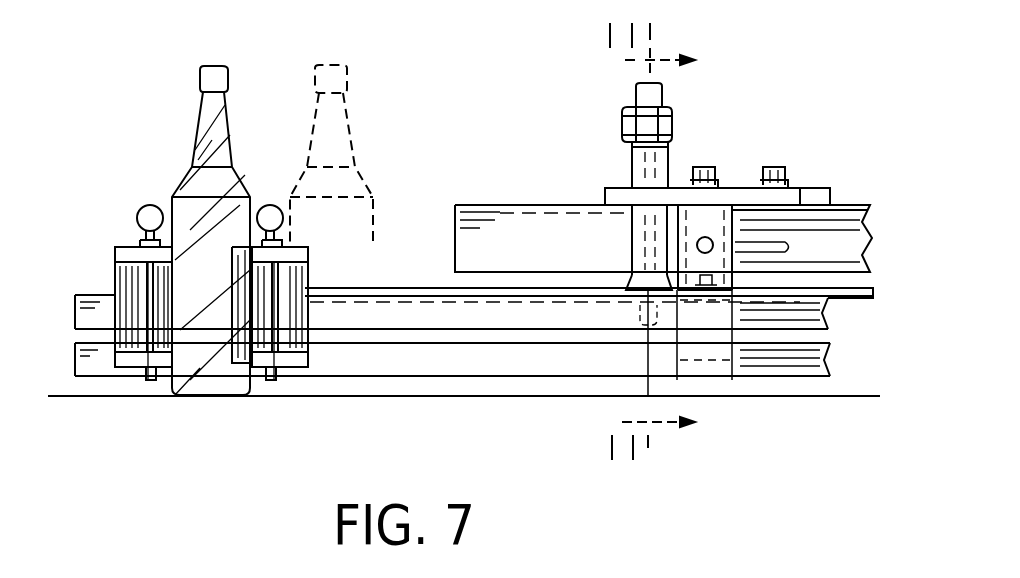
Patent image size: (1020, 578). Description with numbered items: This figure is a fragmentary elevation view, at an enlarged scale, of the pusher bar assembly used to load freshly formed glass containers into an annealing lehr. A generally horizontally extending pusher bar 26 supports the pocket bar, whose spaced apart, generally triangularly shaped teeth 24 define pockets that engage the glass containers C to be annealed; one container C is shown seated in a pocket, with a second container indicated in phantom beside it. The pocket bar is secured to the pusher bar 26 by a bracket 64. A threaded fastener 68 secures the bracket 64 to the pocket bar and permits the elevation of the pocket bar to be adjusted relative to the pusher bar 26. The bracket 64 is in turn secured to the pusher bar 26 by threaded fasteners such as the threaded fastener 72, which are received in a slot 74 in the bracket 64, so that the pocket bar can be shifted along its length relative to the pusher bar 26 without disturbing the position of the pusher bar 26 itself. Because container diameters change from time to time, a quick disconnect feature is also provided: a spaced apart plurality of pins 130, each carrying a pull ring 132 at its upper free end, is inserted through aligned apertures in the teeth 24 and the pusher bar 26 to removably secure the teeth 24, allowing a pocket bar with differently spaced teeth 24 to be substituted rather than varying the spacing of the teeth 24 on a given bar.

The teeth 24 is at (128, 247).
The pusher bar 26 is at (508, 237).
The bracket 64 is at (735, 195).
The threaded fastener 68 is at (622, 125).
The threaded fastener 72 is at (780, 167).
The slot 74 is at (698, 167).
The pin 130 is at (152, 330).
The pull ring 132 is at (150, 200).
The glass container C is at (197, 105).